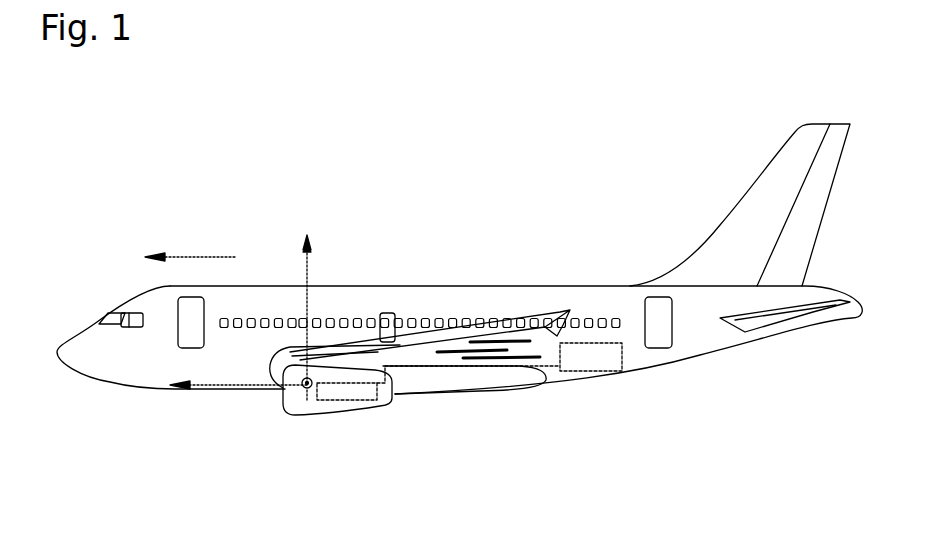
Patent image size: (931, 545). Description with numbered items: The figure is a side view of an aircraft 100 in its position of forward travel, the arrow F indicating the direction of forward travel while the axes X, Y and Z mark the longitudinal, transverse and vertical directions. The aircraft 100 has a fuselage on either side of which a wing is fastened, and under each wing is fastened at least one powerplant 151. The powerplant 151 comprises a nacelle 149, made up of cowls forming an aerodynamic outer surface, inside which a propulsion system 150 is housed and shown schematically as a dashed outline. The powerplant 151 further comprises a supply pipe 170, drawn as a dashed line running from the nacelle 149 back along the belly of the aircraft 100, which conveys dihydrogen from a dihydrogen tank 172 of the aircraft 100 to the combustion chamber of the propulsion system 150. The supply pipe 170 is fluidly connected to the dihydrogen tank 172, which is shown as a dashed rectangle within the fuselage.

The aircraft 100 is at (444, 230).
The nacelle 149 is at (330, 407).
The propulsion system 150 is at (357, 392).
The powerplant 151 is at (260, 430).
The supply pipe 170 is at (557, 366).
The dihydrogen tank 172 is at (600, 353).